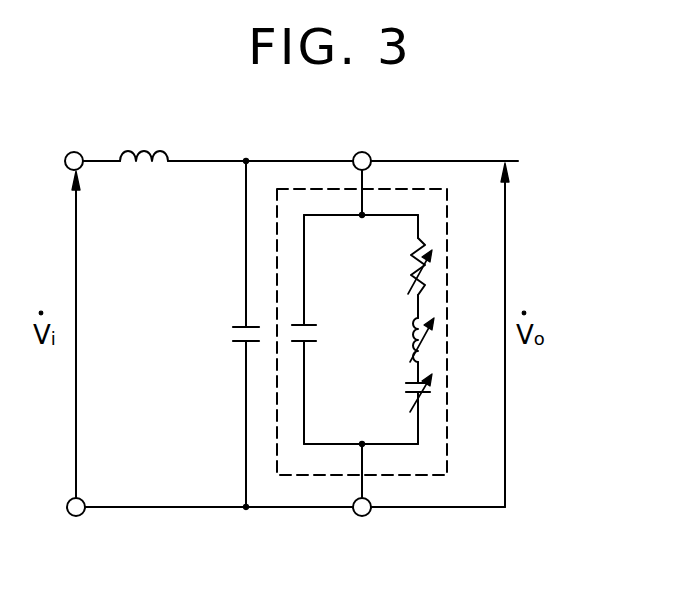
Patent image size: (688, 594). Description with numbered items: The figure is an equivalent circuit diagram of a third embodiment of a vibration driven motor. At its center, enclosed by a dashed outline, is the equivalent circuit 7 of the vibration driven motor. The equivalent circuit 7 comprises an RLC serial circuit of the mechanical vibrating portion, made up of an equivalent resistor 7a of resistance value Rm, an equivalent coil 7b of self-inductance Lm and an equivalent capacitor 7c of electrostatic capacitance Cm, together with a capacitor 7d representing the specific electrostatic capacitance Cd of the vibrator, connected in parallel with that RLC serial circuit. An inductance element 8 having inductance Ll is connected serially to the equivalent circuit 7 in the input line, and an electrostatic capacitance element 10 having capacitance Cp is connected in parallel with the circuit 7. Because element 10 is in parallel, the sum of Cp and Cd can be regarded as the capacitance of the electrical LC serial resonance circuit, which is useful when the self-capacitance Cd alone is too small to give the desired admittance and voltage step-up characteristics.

The equivalent circuit of the vibration driven motor 7 is at (388, 188).
The equivalent resistor 7a is at (433, 266).
The equivalent coil 7b is at (434, 345).
The equivalent capacitor 7c is at (432, 393).
The capacitor 7d is at (326, 340).
The inductance element 8 is at (172, 150).
The electrostatic capacitance element 10 is at (213, 342).